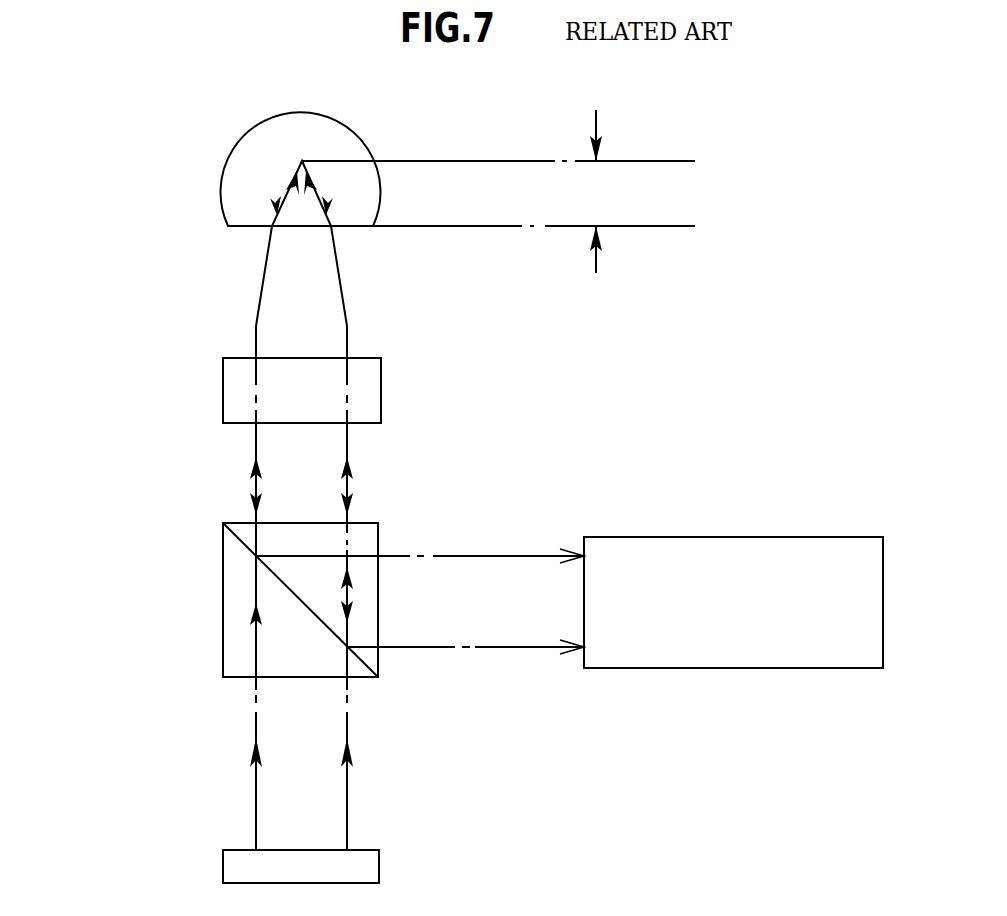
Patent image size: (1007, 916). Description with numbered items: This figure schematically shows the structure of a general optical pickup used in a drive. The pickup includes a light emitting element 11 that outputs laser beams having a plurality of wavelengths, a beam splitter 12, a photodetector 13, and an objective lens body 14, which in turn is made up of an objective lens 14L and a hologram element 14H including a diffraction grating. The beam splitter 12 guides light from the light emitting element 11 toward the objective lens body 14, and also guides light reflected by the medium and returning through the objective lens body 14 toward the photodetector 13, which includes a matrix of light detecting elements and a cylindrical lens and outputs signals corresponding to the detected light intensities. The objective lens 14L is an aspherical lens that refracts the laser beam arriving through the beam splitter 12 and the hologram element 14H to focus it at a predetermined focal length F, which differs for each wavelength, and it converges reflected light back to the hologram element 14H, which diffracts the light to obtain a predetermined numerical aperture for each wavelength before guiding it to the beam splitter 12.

The light emitting element 11 is at (223, 867).
The beam splitter 12 is at (223, 598).
The photodetector 13 is at (738, 537).
The objective lens body 14 is at (105, 228).
The objective lens 14L is at (382, 273).
The hologram element 14H is at (382, 388).
The focal length F is at (498, 206).